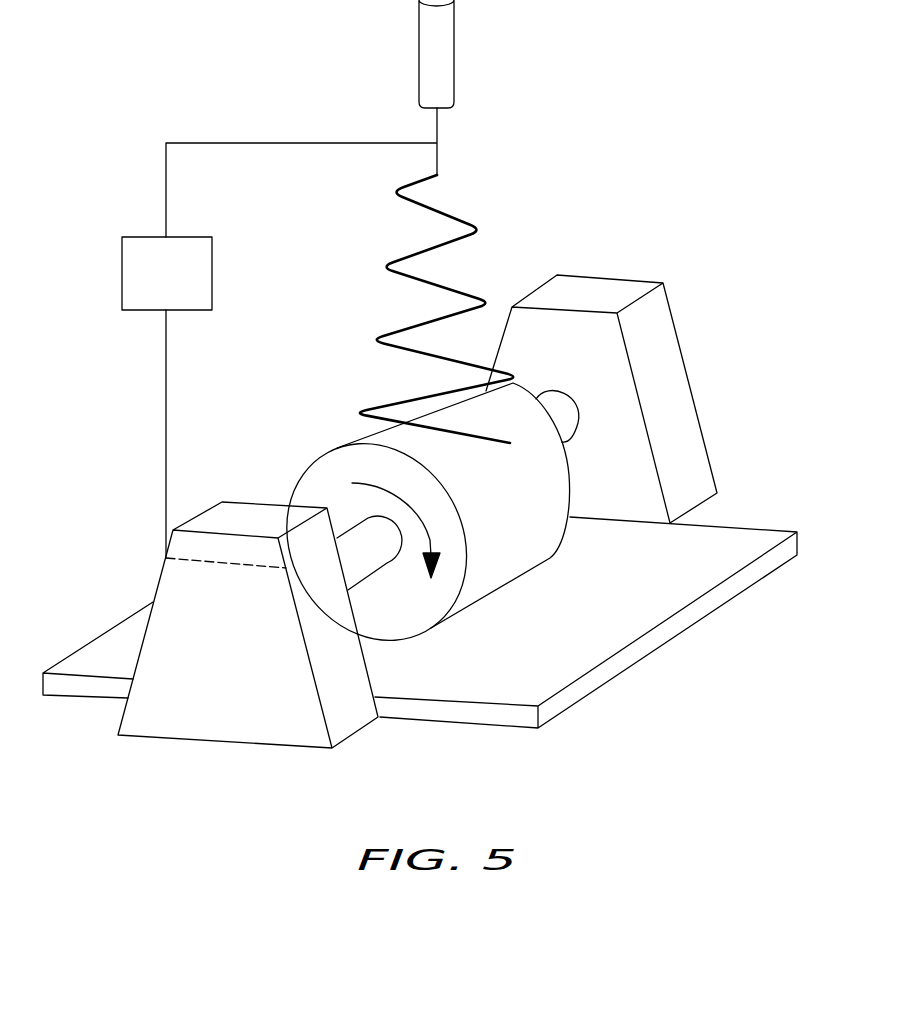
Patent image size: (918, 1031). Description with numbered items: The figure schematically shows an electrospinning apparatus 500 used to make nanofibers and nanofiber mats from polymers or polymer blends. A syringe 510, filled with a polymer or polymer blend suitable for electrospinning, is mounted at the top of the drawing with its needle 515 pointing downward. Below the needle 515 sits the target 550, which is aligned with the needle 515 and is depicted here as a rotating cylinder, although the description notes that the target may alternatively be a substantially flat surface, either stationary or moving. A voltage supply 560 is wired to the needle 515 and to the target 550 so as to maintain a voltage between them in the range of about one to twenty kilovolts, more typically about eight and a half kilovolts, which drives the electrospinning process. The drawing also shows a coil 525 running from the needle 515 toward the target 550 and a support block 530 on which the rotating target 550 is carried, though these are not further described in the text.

The electrospinning apparatus 500 is at (627, 103).
The syringe 510 is at (442, 47).
The needle 515 is at (438, 126).
The coil spring 525 is at (450, 210).
The support block 530 is at (170, 620).
The target 550 is at (550, 478).
The voltage supply 560 is at (143, 275).